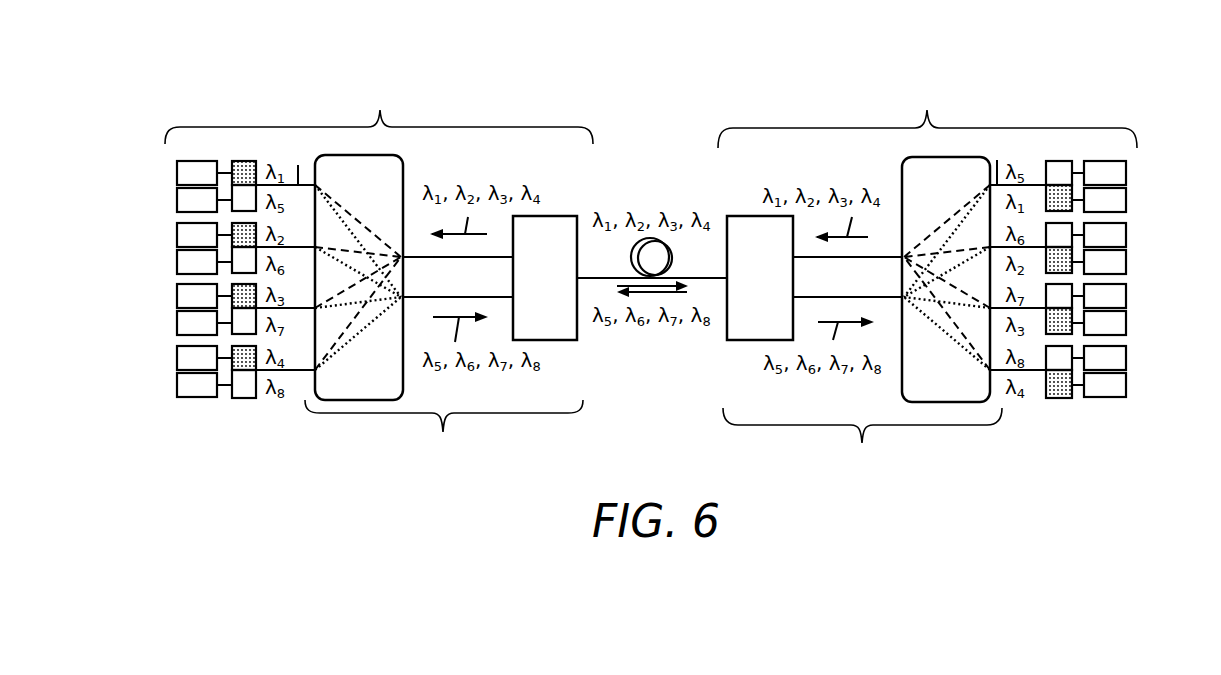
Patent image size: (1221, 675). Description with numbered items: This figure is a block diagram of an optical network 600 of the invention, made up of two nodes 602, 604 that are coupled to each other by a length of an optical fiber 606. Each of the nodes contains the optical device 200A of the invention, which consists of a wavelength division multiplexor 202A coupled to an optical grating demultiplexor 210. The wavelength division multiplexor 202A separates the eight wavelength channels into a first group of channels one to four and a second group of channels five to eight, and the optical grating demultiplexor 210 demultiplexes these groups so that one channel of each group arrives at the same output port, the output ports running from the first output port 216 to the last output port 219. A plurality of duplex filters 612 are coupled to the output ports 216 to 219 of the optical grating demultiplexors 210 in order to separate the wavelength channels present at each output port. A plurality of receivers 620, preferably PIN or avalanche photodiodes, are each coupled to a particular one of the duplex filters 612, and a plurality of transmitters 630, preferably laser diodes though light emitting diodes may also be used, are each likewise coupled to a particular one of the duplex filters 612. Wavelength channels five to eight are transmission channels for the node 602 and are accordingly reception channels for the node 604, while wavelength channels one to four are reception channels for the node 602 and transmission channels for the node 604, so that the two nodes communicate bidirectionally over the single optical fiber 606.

The optical network 600 is at (700, 47).
The node 602 is at (379, 111).
The node 604 is at (927, 114).
The optical fiber 606 is at (633, 271).
The output port 216 is at (658, 159).
The output port 219 is at (298, 372).
The optical grating demultiplexor 210 is at (382, 391).
The wavelength division multiplexor 202A is at (573, 327).
The optical device 200A is at (653, 441).
The duplex filter 612 is at (243, 398).
The receiver 620 is at (643, 265).
The transmitter 630 is at (661, 294).